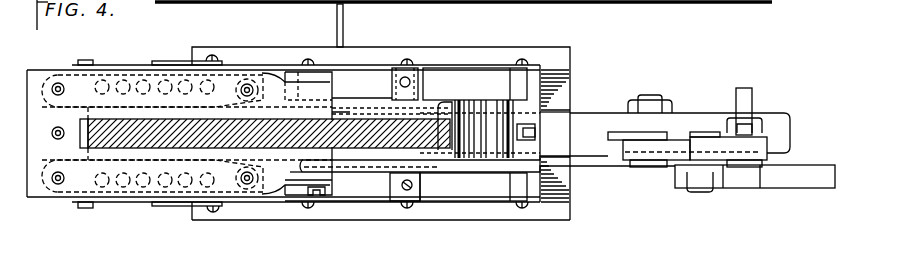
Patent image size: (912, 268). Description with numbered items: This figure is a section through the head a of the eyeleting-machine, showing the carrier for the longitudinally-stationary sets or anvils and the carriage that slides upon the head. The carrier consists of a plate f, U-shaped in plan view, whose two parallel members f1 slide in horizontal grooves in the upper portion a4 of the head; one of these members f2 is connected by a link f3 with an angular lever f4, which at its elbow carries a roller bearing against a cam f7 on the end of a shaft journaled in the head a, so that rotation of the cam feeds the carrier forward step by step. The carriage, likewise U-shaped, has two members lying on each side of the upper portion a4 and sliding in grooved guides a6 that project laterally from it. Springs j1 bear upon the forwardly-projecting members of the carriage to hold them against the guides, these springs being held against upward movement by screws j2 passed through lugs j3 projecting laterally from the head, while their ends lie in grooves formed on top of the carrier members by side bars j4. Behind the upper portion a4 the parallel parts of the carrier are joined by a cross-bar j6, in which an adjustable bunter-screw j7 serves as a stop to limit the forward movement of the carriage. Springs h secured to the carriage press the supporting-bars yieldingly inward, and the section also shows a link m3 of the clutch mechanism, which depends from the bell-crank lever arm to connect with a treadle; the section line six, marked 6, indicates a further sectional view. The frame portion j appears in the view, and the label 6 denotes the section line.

The top bar 6 is at (463, 19).
The link m3 is at (344, 30).
The frame casing j is at (515, 83).
The plate f is at (92, 85).
The springs h is at (157, 62).
The parallel members f1 is at (268, 87).
The member f2 is at (278, 173).
The upper portion of the head a4 is at (267, 126).
The screws j2 is at (398, 80).
The lugs j3 is at (413, 113).
The springs j1 is at (458, 77).
The side bars j4 is at (387, 203).
The cross-bar j6 is at (483, 120).
The bunter-screw j7 is at (537, 131).
The head a is at (682, 123).
The link f3 is at (605, 168).
The lever f4 is at (750, 148).
The cam f7 is at (802, 178).
The grooved guides a6 is at (340, 217).